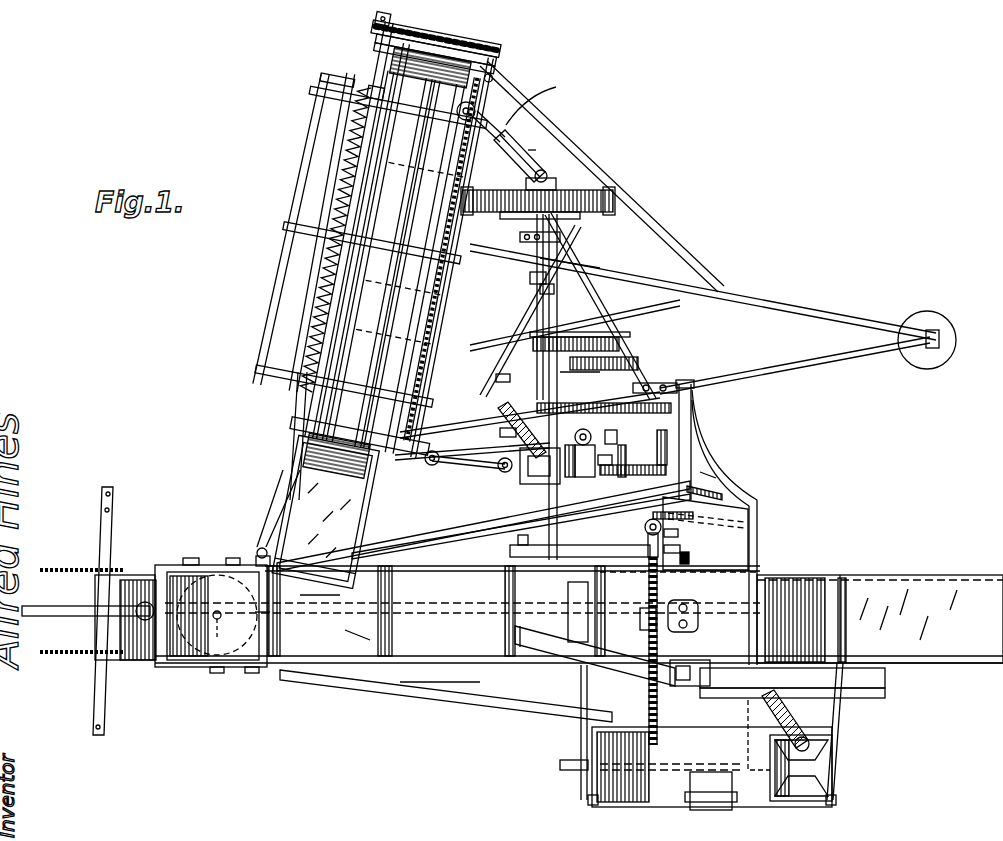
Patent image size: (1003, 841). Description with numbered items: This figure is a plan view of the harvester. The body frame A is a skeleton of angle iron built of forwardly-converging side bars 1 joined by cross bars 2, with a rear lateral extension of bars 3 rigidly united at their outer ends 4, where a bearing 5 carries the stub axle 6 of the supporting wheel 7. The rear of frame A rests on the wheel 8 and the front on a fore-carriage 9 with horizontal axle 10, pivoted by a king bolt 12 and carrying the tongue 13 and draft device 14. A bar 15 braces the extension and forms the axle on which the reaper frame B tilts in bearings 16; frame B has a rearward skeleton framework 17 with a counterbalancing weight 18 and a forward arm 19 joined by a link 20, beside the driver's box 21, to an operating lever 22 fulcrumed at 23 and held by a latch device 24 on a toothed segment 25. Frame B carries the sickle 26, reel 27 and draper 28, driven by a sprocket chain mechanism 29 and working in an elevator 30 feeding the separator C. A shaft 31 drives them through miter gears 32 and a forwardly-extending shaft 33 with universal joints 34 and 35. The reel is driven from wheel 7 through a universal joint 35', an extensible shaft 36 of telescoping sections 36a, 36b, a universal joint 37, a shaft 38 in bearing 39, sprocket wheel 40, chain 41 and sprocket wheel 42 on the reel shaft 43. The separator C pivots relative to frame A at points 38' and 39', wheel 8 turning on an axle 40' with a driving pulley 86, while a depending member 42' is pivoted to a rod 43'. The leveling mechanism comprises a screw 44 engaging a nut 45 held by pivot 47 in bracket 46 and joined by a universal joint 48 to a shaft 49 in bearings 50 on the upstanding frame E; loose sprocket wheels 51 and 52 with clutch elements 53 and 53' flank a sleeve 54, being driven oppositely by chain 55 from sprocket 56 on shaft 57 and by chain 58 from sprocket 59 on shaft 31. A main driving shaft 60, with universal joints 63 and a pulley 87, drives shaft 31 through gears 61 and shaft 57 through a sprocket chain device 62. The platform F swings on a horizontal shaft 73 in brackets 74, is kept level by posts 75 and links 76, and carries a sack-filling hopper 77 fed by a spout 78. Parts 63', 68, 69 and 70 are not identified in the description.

The side bars 1 is at (430, 566).
The cross bars 2 is at (760, 560).
The bars 3 is at (582, 312).
The outer ends 4 is at (566, 251).
The bearing 5 is at (561, 243).
The stub axle 6 is at (547, 280).
The supporting wheel 7 is at (602, 190).
The wheel 8 is at (680, 588).
The fore-carriage 9 is at (181, 629).
The horizontal axle 10 is at (220, 673).
The king bolt 12 is at (217, 615).
The tongue 13 is at (100, 614).
The draft device 14 is at (107, 546).
The bar 15 is at (472, 516).
The bearings 16 is at (530, 238).
The skeleton framework 17 is at (778, 302).
The weight 18 is at (915, 324).
The arm 19 is at (290, 470).
The link 20 is at (262, 548).
The driver's box 21 is at (270, 673).
The operating lever 22 is at (188, 556).
The fulcrum 23 is at (232, 556).
The latch device 24 is at (207, 588).
The toothed segment 25 is at (255, 595).
The sickle 26 is at (305, 299).
The rotary reel 27 is at (315, 204).
The draper 28 is at (361, 311).
The sprocket chain mechanism 29 is at (453, 259).
The elevator 30 is at (378, 512).
The shaft 31 is at (552, 448).
The miter gears 32 is at (540, 484).
The forwardly-extending shaft 33 is at (470, 470).
The universal joint 34 is at (505, 473).
The universal joint 35 is at (430, 477).
The universal joint 35' is at (563, 155).
The extensible shaft 36 is at (518, 138).
The shaft section 36a is at (544, 98).
The shaft section 36b is at (535, 150).
The universal joint 37 is at (474, 108).
The shaft 38 is at (505, 30).
The pivot point 38' is at (880, 619).
The bearing 39 is at (453, 63).
The pivot point 39' is at (581, 612).
The sprocket wheel 40 is at (466, 50).
The axle 40' is at (689, 546).
The sprocket chain 41 is at (466, 34).
The sprocket wheel 42 is at (361, 26).
The depending member 42' is at (320, 602).
The reel shaft 43 is at (388, 238).
The horizontally-extending rod 43' is at (347, 630).
The leveling screw 44 is at (660, 647).
The nut 45 is at (642, 620).
The bracket 46 is at (690, 606).
The pivot 47 is at (695, 624).
The universal joint 48 is at (672, 531).
The shaft 49 is at (662, 392).
The bearings 50 is at (668, 392).
The sprocket wheel 51 is at (716, 476).
The sprocket wheel 52 is at (694, 400).
The clutch element 53 is at (729, 527).
The clutch element 53' is at (735, 421).
The sleeve 54 is at (703, 436).
The sprocket chain 55 is at (646, 515).
The sprocket wheel 56 is at (604, 456).
The shaft 57 is at (618, 346).
The sprocket chain 58 is at (607, 428).
The sprocket wheel 59 is at (548, 420).
The main driving shaft 60 is at (580, 533).
The gears 61 is at (578, 344).
The sprocket chain device 62 is at (632, 362).
The universal joints 63 is at (580, 446).
The bearing 63' is at (580, 592).
The bearing 68 is at (626, 447).
The guide 69 is at (706, 448).
The gear 70 is at (633, 463).
The horizontal shaft 73 is at (560, 763).
The brackets 74 is at (580, 742).
The upright posts 75 is at (592, 795).
The links 76 is at (588, 690).
The sack-filling hopper 77 is at (832, 772).
The chute 78 is at (795, 726).
The driving pulley 86 is at (690, 560).
The pulley 87 is at (670, 683).
The body frame A is at (471, 716).
The reaper frame B is at (456, 350).
The separator C is at (522, 598).
The upstanding frame E is at (700, 414).
The platform F is at (712, 768).